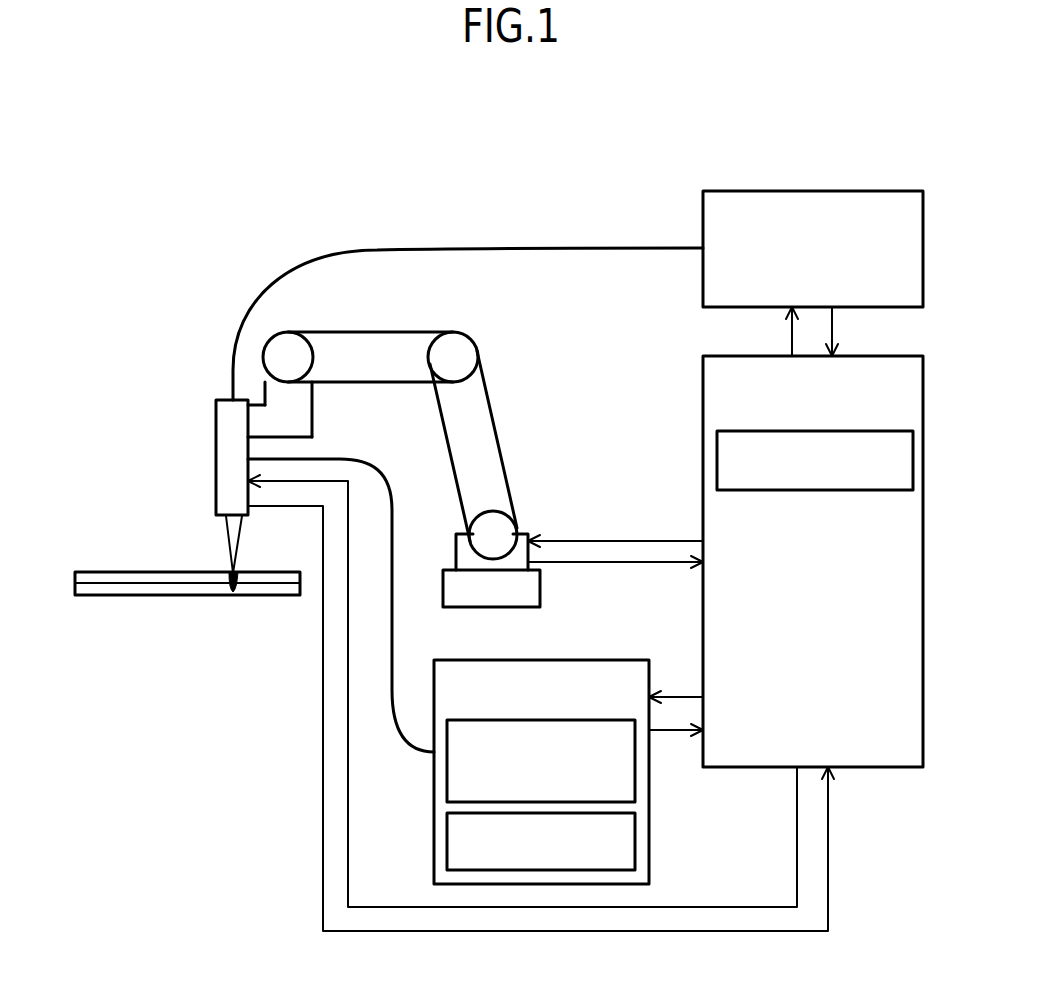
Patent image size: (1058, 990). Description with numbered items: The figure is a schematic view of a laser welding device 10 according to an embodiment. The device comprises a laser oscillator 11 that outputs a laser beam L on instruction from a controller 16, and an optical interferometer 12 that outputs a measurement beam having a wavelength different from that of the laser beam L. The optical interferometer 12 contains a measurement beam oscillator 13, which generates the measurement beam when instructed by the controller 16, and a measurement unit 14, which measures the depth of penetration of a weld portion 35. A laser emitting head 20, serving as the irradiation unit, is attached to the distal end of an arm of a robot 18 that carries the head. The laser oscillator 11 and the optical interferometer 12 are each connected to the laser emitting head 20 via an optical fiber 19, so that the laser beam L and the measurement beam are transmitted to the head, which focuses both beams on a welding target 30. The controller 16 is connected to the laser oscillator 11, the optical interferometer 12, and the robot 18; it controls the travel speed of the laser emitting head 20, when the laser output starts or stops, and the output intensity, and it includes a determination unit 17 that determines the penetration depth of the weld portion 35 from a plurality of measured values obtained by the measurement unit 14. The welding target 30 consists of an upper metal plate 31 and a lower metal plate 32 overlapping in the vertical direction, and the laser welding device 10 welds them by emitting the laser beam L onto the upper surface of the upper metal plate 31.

The laser welding device 10 is at (500, 163).
The laser oscillator 11 is at (811, 191).
The optical interferometer 12 is at (563, 660).
The measurement beam oscillator 13 is at (635, 770).
The measurement unit 14 is at (635, 843).
The controller 16 is at (703, 392).
The determination unit 17 is at (717, 460).
The robot 18 is at (492, 407).
The optical fiber 19 is at (378, 248).
The laser emitting head 20 is at (216, 447).
The welding target 30 is at (187, 590).
The upper metal plate 31 is at (106, 572).
The lower metal plate 32 is at (106, 597).
The weld portion 35 is at (240, 577).
The laser beam L is at (223, 539).